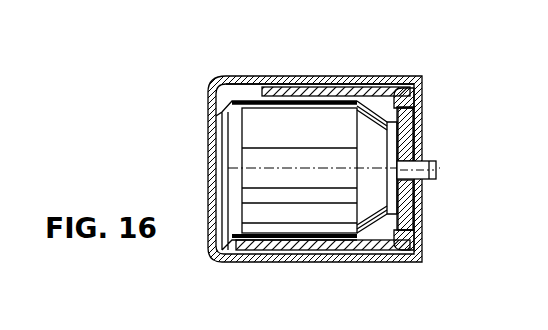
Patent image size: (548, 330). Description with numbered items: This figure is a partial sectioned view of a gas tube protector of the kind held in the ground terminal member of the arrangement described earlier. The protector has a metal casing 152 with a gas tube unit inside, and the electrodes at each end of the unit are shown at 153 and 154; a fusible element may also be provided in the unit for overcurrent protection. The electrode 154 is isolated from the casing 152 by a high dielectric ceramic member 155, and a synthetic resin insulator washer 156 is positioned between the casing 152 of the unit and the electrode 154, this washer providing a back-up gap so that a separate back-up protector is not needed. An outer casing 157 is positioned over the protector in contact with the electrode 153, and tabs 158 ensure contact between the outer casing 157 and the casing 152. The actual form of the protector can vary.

The metal casing 152 is at (373, 91).
The electrode 153 is at (224, 155).
The electrode 154 is at (416, 197).
The high dielectric ceramic member 155 is at (418, 156).
The synthetic resin insulator washer 156 is at (408, 101).
The outer casing 157 is at (278, 77).
The tabs 158 is at (337, 90).